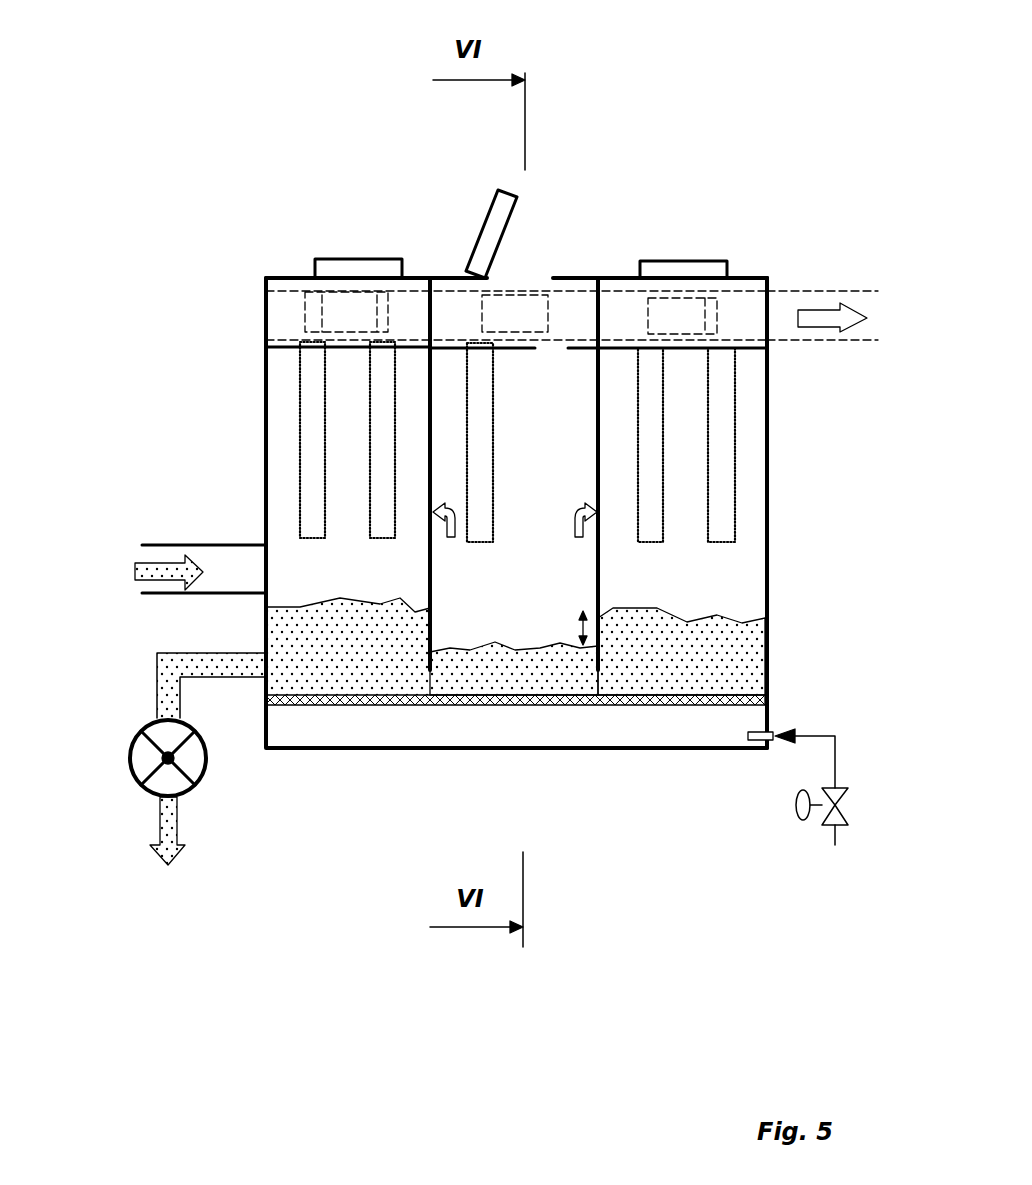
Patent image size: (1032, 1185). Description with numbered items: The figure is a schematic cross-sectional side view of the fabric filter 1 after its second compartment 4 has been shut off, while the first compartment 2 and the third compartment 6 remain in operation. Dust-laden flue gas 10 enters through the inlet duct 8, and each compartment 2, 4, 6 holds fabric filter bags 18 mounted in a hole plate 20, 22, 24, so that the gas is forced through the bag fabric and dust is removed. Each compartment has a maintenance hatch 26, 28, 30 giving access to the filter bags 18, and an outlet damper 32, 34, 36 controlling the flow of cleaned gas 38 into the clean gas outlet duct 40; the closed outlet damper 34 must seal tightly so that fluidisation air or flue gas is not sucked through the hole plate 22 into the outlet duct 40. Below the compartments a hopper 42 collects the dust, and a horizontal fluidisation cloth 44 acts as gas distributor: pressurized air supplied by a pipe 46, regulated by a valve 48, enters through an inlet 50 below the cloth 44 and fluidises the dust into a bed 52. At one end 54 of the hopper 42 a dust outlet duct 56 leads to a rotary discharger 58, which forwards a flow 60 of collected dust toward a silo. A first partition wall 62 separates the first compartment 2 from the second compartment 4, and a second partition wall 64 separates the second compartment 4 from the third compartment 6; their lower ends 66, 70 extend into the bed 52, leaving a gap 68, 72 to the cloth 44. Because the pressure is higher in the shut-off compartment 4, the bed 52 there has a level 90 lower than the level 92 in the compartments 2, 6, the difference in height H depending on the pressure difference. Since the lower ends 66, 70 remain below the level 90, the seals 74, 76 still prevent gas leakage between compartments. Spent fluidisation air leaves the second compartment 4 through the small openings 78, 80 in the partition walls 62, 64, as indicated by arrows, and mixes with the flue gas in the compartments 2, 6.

The fabric filter 1 is at (370, 97).
The first compartment 2 is at (341, 502).
The second compartment 4 is at (510, 507).
The third compartment 6 is at (678, 507).
The inlet duct 8 is at (218, 543).
The dust-laden flue gas 10 is at (165, 565).
The fabric filter bags 18 is at (300, 388).
The hole plate 20 is at (283, 343).
The hole plate 22 is at (457, 346).
The hole plate 24 is at (620, 348).
The maintenance hatch 26 is at (362, 258).
The maintenance hatch 28 is at (483, 228).
The maintenance hatch 30 is at (685, 262).
The outlet damper 32 is at (312, 302).
The outlet damper 34 is at (535, 310).
The outlet damper 36 is at (690, 313).
The cleaned gas 38 is at (840, 318).
The clean gas outlet duct 40 is at (790, 292).
The hopper 42 is at (766, 679).
The fluidisation cloth 44 is at (310, 705).
The pipe 46 is at (835, 762).
The valve 48 is at (848, 808).
The inlet 50 is at (774, 733).
The bed of fluidised dust 52 is at (295, 632).
The end of the hopper 54 is at (262, 645).
The dust outlet duct 56 is at (157, 680).
The rotary discharger 58 is at (128, 762).
The flow of collected dust 60 is at (160, 826).
The first partition wall 62 is at (428, 432).
The second partition wall 64 is at (598, 440).
The lower end 66 is at (427, 670).
The gap 68 is at (432, 686).
The lower end 70 is at (596, 672).
The gap 72 is at (605, 686).
The seal 74 is at (463, 673).
The seal 76 is at (636, 673).
The small opening 78 is at (431, 514).
The small opening 80 is at (600, 514).
The level 90 is at (485, 650).
The level 92 is at (310, 606).
The difference in height H is at (582, 626).